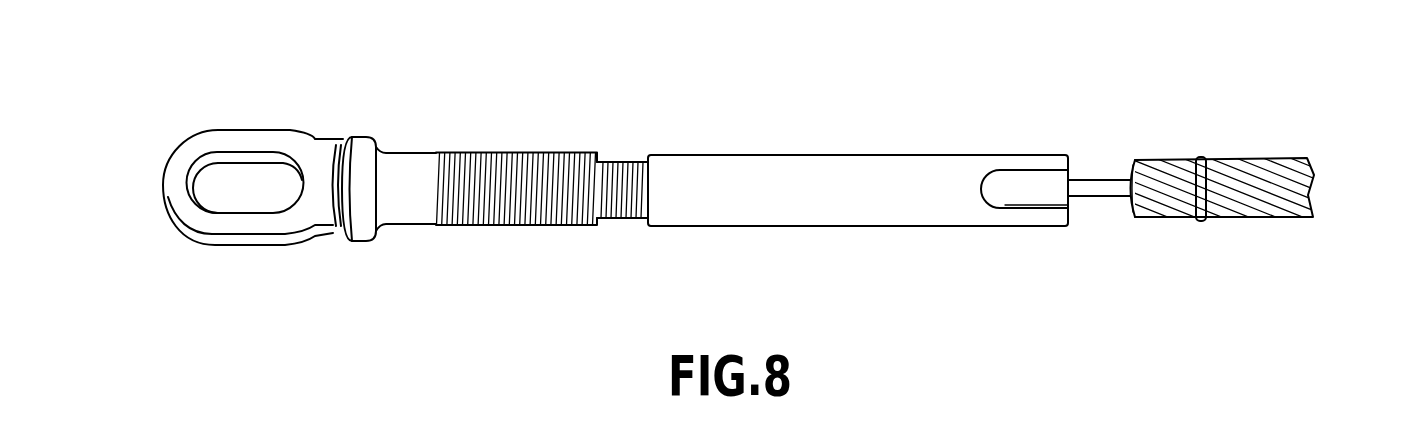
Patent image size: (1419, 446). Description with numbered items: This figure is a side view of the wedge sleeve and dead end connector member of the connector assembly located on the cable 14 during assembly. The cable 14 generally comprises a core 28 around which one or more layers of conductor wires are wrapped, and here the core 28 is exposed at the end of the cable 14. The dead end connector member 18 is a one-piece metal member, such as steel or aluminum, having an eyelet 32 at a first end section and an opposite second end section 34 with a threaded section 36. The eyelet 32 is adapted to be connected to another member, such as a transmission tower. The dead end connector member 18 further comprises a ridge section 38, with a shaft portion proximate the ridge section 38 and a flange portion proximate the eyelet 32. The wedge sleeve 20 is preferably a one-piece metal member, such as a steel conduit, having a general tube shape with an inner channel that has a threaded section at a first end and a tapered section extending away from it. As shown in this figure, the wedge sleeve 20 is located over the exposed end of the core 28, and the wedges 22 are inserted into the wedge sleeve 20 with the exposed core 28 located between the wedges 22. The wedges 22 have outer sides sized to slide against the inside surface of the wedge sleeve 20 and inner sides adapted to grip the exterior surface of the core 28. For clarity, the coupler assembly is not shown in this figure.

The cable 14 is at (1250, 208).
The dead end connector member 18 is at (409, 152).
The wedge sleeve member 20 is at (848, 155).
The wedges 22 is at (842, 192).
The core 28 is at (1083, 187).
The eyelet 32 is at (213, 160).
The second end section 34 is at (632, 221).
The threaded section 36 is at (620, 162).
The ridge section 38 is at (493, 210).